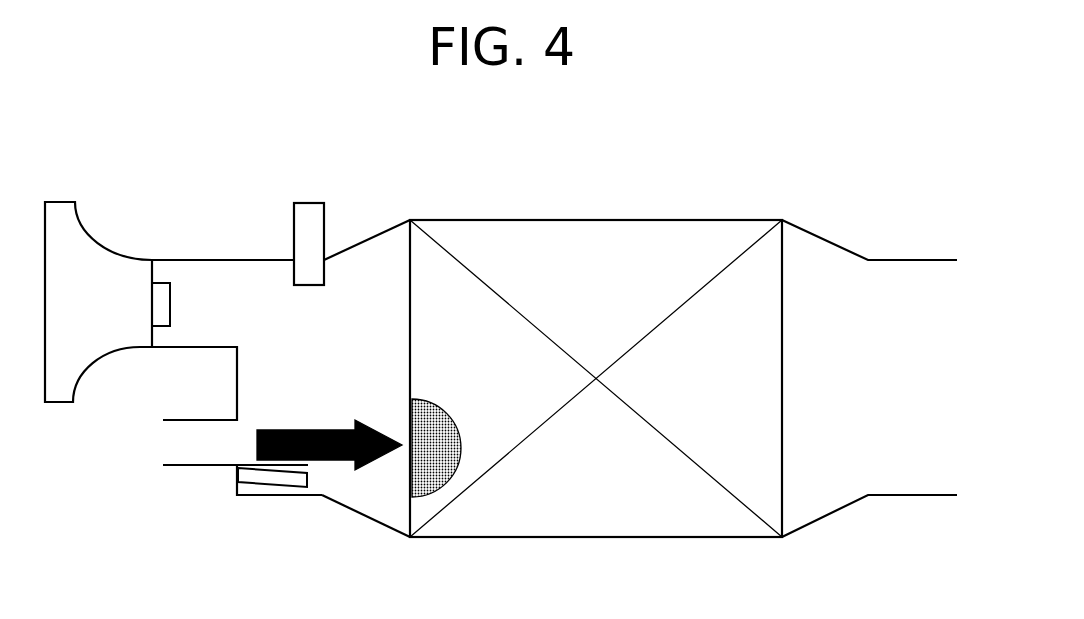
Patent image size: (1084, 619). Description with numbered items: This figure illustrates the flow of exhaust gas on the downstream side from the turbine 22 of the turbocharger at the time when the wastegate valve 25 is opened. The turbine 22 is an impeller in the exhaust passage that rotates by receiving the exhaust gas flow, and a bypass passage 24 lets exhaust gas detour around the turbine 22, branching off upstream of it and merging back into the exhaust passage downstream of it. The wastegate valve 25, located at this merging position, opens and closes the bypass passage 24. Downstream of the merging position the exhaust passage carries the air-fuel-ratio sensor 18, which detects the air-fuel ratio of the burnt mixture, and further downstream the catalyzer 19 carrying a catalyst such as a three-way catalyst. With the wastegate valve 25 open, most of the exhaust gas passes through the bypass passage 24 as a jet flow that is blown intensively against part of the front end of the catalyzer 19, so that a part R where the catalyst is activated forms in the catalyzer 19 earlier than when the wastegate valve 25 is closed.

The air-fuel-ratio sensor 18 is at (294, 227).
The catalyzer 19 is at (590, 228).
The turbine 22 is at (103, 247).
The bypass passage 24 is at (202, 467).
The wastegate valve 25 is at (272, 487).
The part where the catalyst is activated R is at (448, 420).